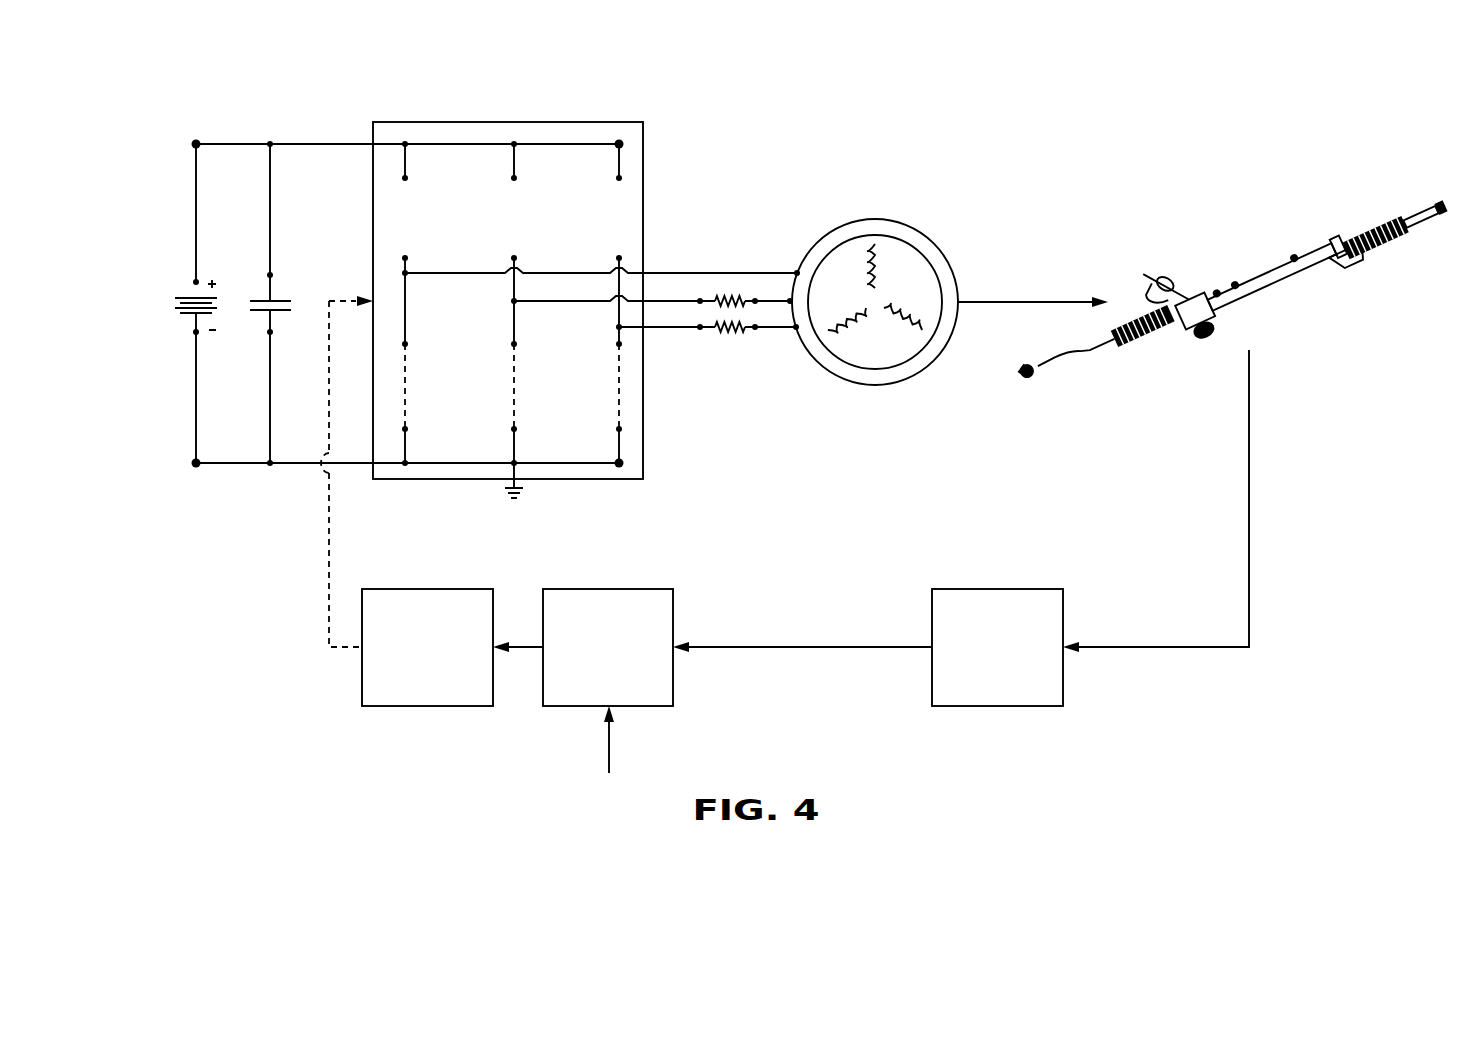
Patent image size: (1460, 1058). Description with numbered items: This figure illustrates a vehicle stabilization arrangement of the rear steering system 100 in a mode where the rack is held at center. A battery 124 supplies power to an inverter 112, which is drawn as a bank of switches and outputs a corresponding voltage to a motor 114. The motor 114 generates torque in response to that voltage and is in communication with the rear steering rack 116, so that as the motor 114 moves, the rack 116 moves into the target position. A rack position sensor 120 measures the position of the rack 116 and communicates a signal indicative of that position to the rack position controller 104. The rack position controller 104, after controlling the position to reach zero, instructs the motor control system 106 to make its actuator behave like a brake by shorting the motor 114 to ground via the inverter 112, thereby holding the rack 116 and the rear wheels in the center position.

The rear steering system 100 is at (1340, 122).
The rack position controller 104 is at (610, 588).
The motor control system 106 is at (427, 588).
The inverter 112 is at (612, 122).
The motor 114 is at (930, 237).
The rear steering rack 116 is at (1392, 222).
The rack position sensor 120 is at (998, 588).
The battery 124 is at (131, 328).